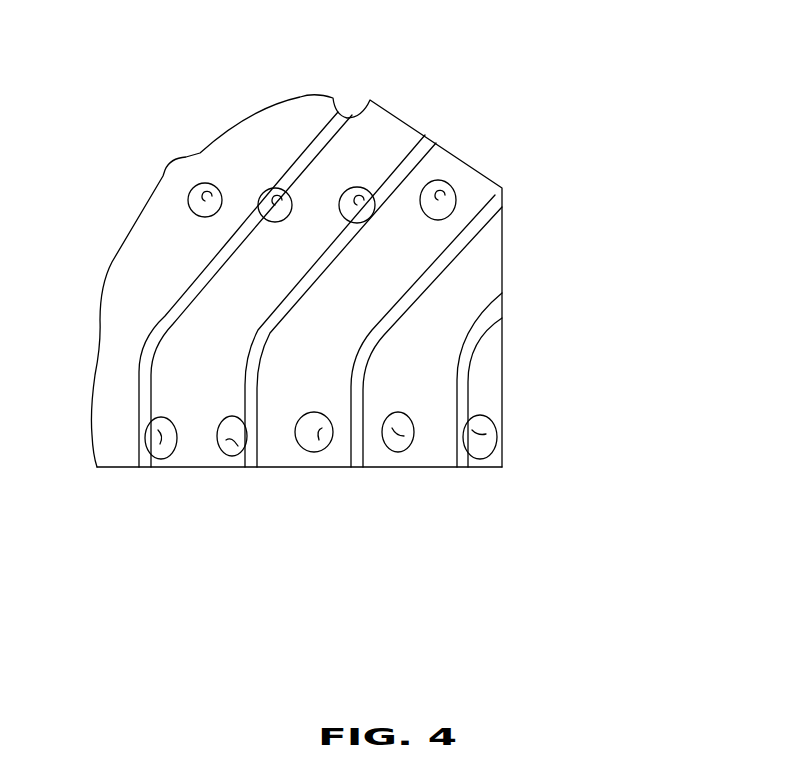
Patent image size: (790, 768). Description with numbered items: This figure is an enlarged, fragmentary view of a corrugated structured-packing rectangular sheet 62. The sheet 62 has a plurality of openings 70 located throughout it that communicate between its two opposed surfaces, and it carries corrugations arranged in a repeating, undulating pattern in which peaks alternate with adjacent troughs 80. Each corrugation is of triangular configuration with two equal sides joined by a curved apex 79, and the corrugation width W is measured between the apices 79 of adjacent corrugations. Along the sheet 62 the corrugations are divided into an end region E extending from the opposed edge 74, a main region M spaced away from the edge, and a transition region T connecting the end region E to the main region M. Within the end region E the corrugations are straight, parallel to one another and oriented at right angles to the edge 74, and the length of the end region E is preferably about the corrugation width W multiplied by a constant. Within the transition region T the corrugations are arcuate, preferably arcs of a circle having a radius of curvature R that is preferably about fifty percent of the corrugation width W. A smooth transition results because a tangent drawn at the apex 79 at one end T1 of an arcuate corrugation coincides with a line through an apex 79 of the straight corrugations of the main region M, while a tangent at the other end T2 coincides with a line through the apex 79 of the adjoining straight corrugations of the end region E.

The rectangular sheet 62 is at (333, 88).
The openings 70 is at (262, 192).
The opposed edge 74 is at (220, 467).
The curved apex 79 is at (352, 387).
The troughs 80 is at (257, 278).
The first end of arcuate corrugation T1 is at (367, 292).
The second end of arcuate corrugation T2 is at (353, 400).
The radius of curvature R is at (497, 347).
The main region M is at (636, 65).
The transition region T is at (502, 467).
The end region E is at (652, 426).
The corrugation width W is at (463, 503).